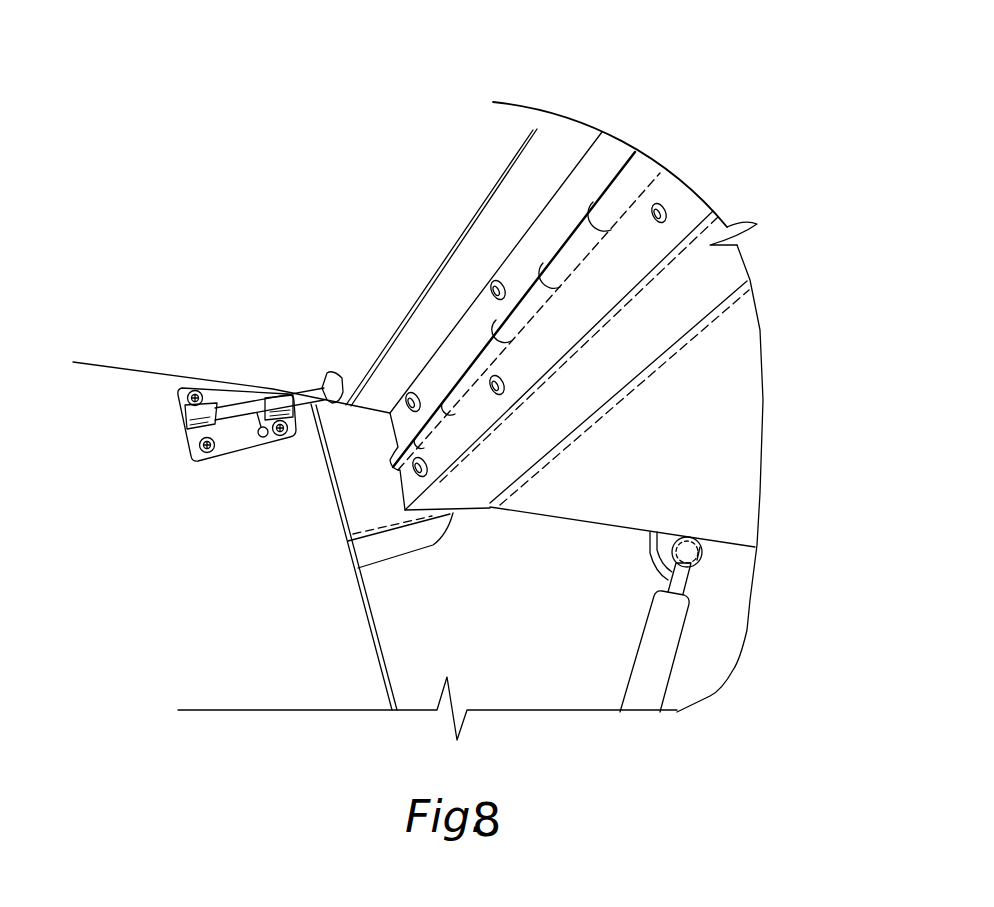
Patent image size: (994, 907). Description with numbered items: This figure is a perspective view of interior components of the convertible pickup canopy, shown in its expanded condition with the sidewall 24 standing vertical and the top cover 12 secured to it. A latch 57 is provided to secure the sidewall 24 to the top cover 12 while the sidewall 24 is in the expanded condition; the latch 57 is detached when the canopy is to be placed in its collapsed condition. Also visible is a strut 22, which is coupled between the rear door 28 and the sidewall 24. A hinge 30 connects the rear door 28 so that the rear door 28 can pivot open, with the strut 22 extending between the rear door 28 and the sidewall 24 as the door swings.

The top cover 12 is at (177, 332).
The strut 22 is at (667, 647).
The sidewall 24 is at (275, 672).
The rear door 28 is at (727, 432).
The hinge 30 is at (606, 180).
The latch 57 is at (245, 398).